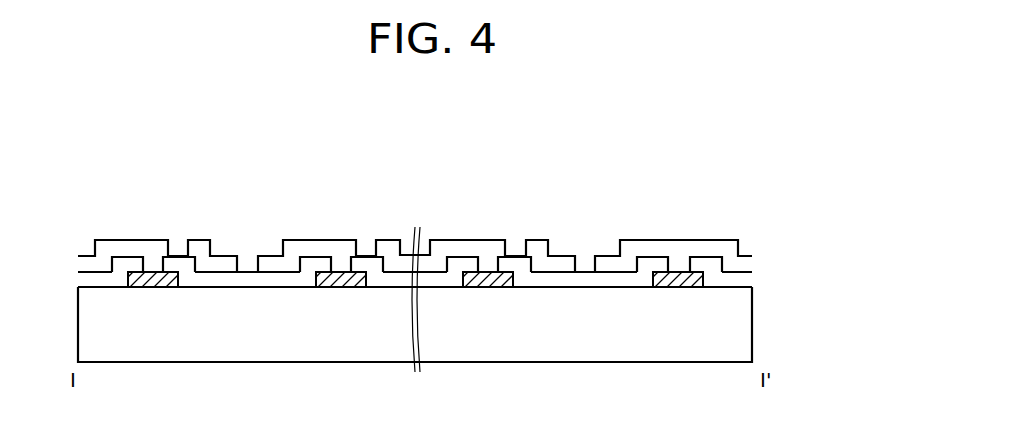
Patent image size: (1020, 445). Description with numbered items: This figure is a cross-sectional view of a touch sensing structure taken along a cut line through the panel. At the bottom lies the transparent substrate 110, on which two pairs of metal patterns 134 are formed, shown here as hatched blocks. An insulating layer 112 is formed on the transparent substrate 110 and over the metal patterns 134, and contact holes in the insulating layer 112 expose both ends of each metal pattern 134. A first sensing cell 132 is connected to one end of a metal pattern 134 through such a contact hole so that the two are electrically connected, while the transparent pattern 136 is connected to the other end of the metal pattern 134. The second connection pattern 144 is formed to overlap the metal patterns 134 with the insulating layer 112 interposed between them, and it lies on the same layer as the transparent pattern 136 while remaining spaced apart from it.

The transparent substrate 110 is at (748, 322).
The insulating layer 112 is at (753, 276).
The first sensing cell 132 is at (127, 248).
The metal pattern 134 is at (151, 278).
The transparent pattern 136 is at (342, 248).
The second connection pattern 144 is at (200, 247).